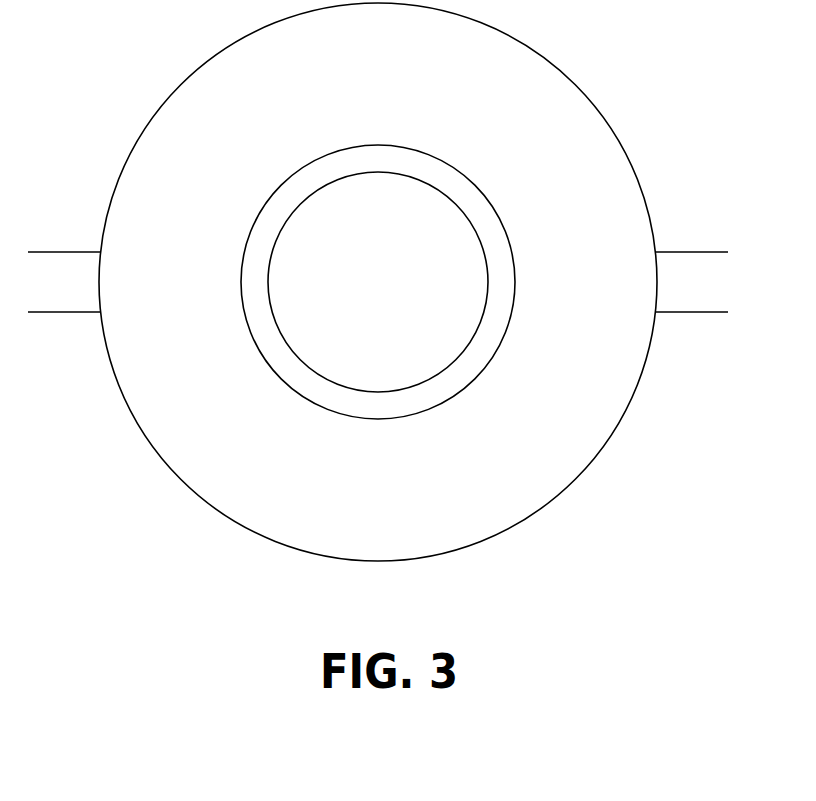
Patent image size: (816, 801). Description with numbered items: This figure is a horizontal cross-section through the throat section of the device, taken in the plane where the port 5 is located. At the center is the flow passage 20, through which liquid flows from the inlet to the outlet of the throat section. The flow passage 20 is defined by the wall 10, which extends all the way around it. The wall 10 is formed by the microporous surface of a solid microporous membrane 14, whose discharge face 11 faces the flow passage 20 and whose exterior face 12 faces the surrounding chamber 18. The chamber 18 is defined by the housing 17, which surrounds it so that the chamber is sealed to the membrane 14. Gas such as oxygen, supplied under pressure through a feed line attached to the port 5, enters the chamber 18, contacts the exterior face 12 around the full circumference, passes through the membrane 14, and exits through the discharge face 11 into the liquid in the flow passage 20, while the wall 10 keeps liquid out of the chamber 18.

The port 5 is at (72, 296).
The wall 10 is at (413, 181).
The discharge face 11 is at (477, 238).
The exterior face 12 is at (495, 357).
The microporous membrane 14 is at (463, 173).
The housing 17 is at (636, 170).
The chamber 18 is at (326, 100).
The flow passage 20 is at (363, 339).